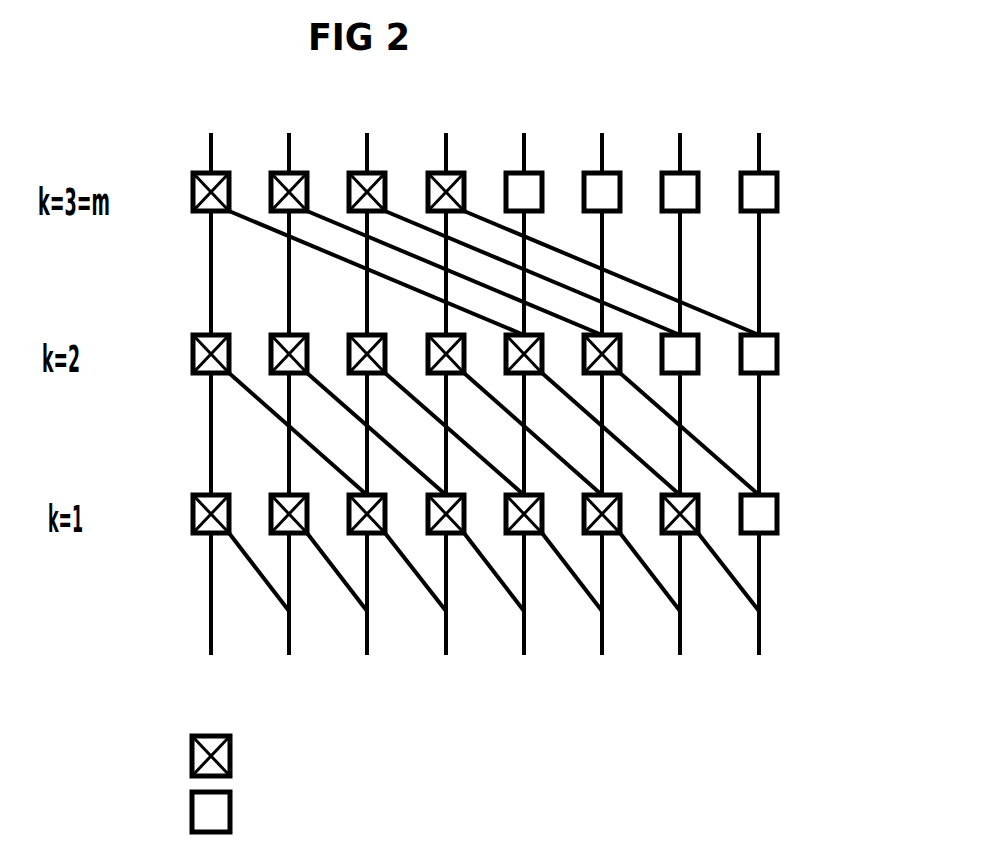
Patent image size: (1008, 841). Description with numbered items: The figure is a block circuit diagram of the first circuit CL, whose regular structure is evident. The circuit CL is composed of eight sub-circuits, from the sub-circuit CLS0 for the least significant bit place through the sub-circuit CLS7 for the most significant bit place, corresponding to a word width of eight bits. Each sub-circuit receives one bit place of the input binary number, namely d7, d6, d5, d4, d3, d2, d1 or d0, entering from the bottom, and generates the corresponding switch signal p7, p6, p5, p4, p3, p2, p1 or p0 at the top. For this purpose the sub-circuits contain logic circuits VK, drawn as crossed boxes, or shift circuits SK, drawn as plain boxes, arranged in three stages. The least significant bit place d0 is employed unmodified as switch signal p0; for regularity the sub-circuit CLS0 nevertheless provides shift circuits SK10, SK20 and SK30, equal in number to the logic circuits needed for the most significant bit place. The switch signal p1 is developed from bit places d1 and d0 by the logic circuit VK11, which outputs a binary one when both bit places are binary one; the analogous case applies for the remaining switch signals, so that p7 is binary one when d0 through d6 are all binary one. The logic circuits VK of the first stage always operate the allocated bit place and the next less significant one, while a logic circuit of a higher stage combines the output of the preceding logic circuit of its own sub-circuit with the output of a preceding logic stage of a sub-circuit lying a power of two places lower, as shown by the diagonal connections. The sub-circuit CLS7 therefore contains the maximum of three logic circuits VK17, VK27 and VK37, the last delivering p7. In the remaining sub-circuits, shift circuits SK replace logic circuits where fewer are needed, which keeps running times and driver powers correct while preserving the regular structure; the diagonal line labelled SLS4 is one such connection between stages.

The logic circuit VK37 is at (182, 197).
The logic circuit VK27 is at (183, 358).
The logic circuit VK17 is at (185, 518).
The logic circuit VK11 is at (681, 491).
The shift circuit SK30 is at (790, 190).
The shift circuit SK20 is at (791, 352).
The shift circuit SK10 is at (790, 512).
The logic circuit VK is at (230, 755).
The shift circuit SK is at (230, 810).
The first circuit CL is at (175, 629).
The sub-circuit CLS7 is at (253, 588).
The sub-circuit CLS0 is at (796, 569).
The diagonal connection line from VK14 SLS4 is at (488, 587).
The switch signal p7 is at (211, 133).
The switch signal p6 is at (289, 133).
The switch signal p5 is at (367, 133).
The switch signal p4 is at (446, 133).
The switch signal p3 is at (524, 133).
The switch signal p2 is at (602, 133).
The switch signal p1 is at (680, 133).
The switch signal p0 is at (759, 133).
The bit place d7 is at (211, 614).
The bit place d6 is at (289, 614).
The bit place d5 is at (367, 614).
The bit place d4 is at (446, 614).
The bit place d3 is at (524, 614).
The bit place d2 is at (602, 614).
The bit place d1 is at (680, 614).
The bit place d0 is at (759, 614).